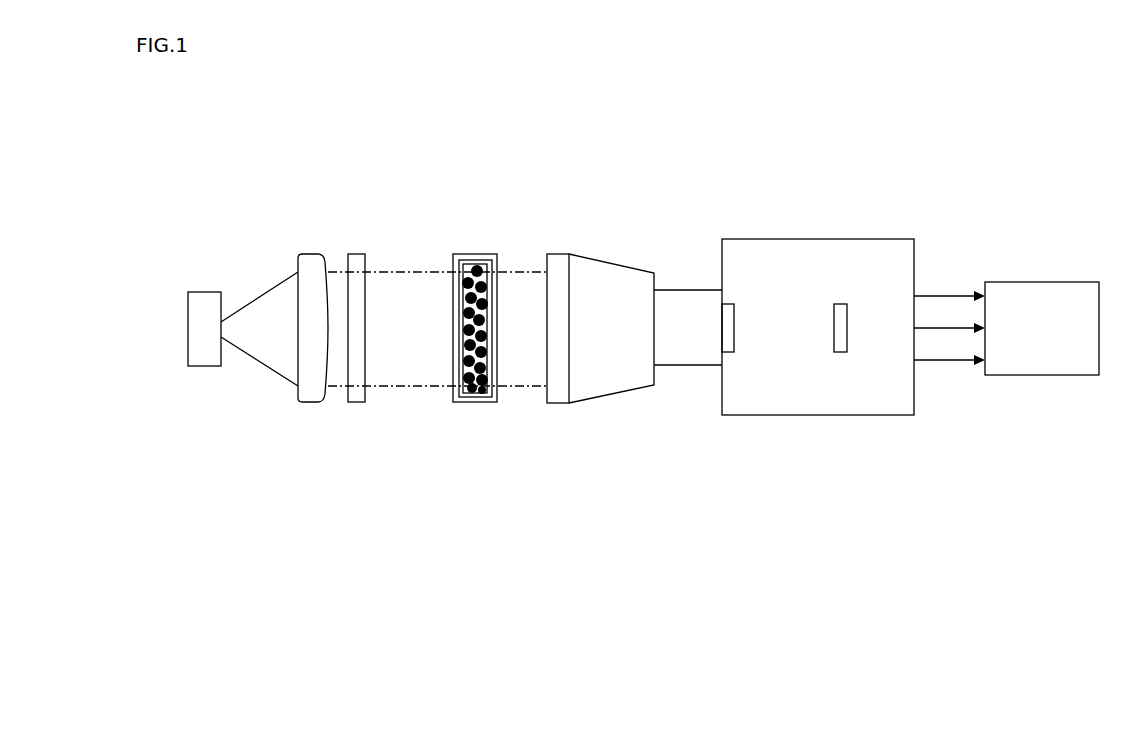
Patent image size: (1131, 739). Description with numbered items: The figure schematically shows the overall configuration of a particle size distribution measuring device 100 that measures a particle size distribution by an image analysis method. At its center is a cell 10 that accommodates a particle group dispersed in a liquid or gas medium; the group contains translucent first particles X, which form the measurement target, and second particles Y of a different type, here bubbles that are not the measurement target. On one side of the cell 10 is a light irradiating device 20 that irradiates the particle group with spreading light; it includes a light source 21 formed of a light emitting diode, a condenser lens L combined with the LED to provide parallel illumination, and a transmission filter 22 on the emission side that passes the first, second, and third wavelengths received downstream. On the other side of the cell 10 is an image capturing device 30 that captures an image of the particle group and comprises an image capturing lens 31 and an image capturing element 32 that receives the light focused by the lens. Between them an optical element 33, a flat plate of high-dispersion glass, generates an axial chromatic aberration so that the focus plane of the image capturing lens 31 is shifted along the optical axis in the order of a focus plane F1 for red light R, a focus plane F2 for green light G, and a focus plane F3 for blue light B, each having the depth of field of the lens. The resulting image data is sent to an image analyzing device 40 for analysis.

The particle size distribution measuring device 100 is at (374, 176).
The cell 10 is at (477, 254).
The light irradiating device 20 is at (185, 452).
The light source 21 is at (204, 366).
The condenser lens L is at (306, 402).
The transmission filter 22 is at (357, 402).
The image capturing device 30 is at (816, 450).
The image capturing lens 31 is at (622, 390).
The image capturing element 32 is at (840, 352).
The optical element 33 is at (553, 403).
The image analyzing device 40 is at (1043, 375).
The first particles X is at (458, 272).
The second particles Y is at (467, 362).
The focus plane F1 is at (465, 400).
The focus plane F2 is at (476, 400).
The focus plane F3 is at (489, 400).
The red light R is at (949, 292).
The green light G is at (949, 324).
The blue light B is at (949, 356).